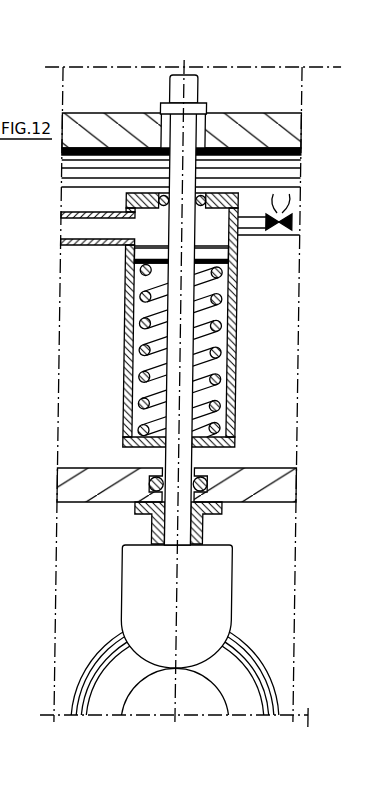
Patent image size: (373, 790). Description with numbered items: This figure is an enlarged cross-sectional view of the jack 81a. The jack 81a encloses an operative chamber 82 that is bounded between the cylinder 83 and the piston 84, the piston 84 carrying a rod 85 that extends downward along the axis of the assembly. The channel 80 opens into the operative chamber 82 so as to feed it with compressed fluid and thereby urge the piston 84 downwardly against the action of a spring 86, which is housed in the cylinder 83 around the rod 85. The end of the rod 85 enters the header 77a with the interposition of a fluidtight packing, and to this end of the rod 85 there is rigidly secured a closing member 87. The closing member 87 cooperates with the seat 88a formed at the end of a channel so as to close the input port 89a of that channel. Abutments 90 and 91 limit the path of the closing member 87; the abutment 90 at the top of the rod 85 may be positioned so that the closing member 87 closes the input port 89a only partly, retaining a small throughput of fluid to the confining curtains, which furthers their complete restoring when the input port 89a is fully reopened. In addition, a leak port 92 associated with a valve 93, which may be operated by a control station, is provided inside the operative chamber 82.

The abutment 90 is at (206, 108).
The leak port 92 is at (242, 217).
The valve 93 is at (297, 222).
The channel 80 is at (100, 246).
The operative chamber 82 is at (216, 240).
The piston 84 is at (156, 264).
The spring 86 is at (144, 351).
The cylinder 83 is at (241, 324).
The jack 81a is at (243, 320).
The header 77a is at (292, 480).
The rod 85 is at (190, 456).
The abutment 91 is at (210, 537).
The closing member 87 is at (223, 605).
The seat 88a is at (244, 687).
The input port 89a is at (161, 698).